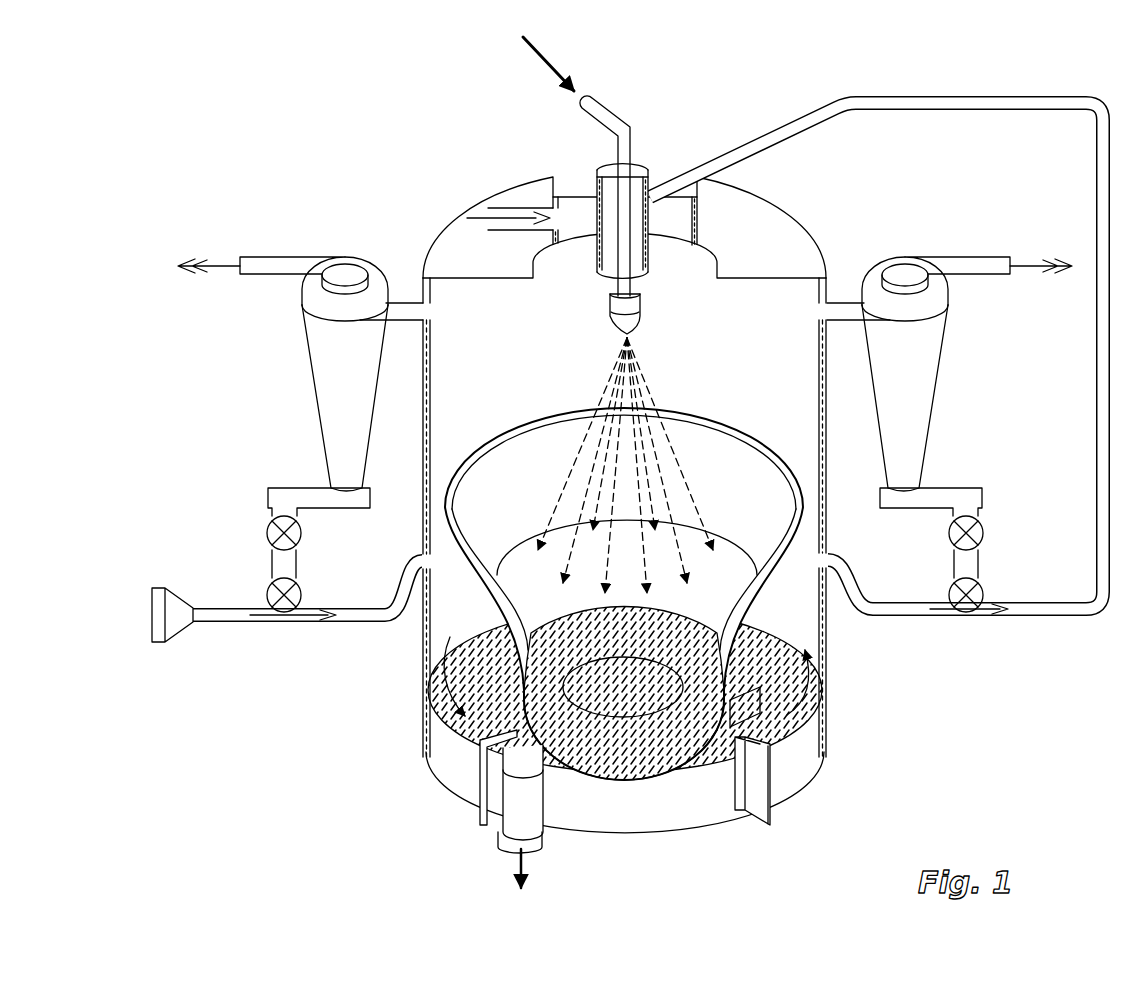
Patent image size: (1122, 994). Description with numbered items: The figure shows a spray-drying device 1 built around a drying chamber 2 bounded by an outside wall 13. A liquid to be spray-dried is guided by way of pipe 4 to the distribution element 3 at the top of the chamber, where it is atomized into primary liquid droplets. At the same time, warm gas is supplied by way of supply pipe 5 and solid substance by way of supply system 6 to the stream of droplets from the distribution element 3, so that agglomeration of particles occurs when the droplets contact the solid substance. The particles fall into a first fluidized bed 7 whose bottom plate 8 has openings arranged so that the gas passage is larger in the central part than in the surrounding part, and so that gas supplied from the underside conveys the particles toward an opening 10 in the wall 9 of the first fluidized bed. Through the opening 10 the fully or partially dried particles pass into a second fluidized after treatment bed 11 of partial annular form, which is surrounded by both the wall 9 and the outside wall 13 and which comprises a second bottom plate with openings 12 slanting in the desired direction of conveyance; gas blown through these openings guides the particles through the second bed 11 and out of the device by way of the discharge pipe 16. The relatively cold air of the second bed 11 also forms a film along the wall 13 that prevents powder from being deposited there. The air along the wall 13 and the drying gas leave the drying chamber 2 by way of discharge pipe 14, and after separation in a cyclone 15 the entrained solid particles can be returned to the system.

The apparatus 1 is at (677, 111).
The drying chamber 2 is at (739, 355).
The distribution element 3 is at (610, 302).
The pipe 4 is at (604, 120).
The supply pipe 5 is at (512, 203).
The supply system 6 is at (755, 140).
The first fluidized bed 7 is at (610, 747).
The bottom plate 8 is at (667, 742).
The wall 9 is at (740, 470).
The opening 10 is at (743, 742).
The second fluidized after treatment bed 11 is at (820, 737).
The second bottom plate with openings 12 is at (820, 717).
The outside wall of the drying chamber 13 is at (805, 600).
The discharge pipe 14 is at (840, 300).
The cyclone 15 is at (923, 382).
The discharge pipe 16 is at (511, 840).